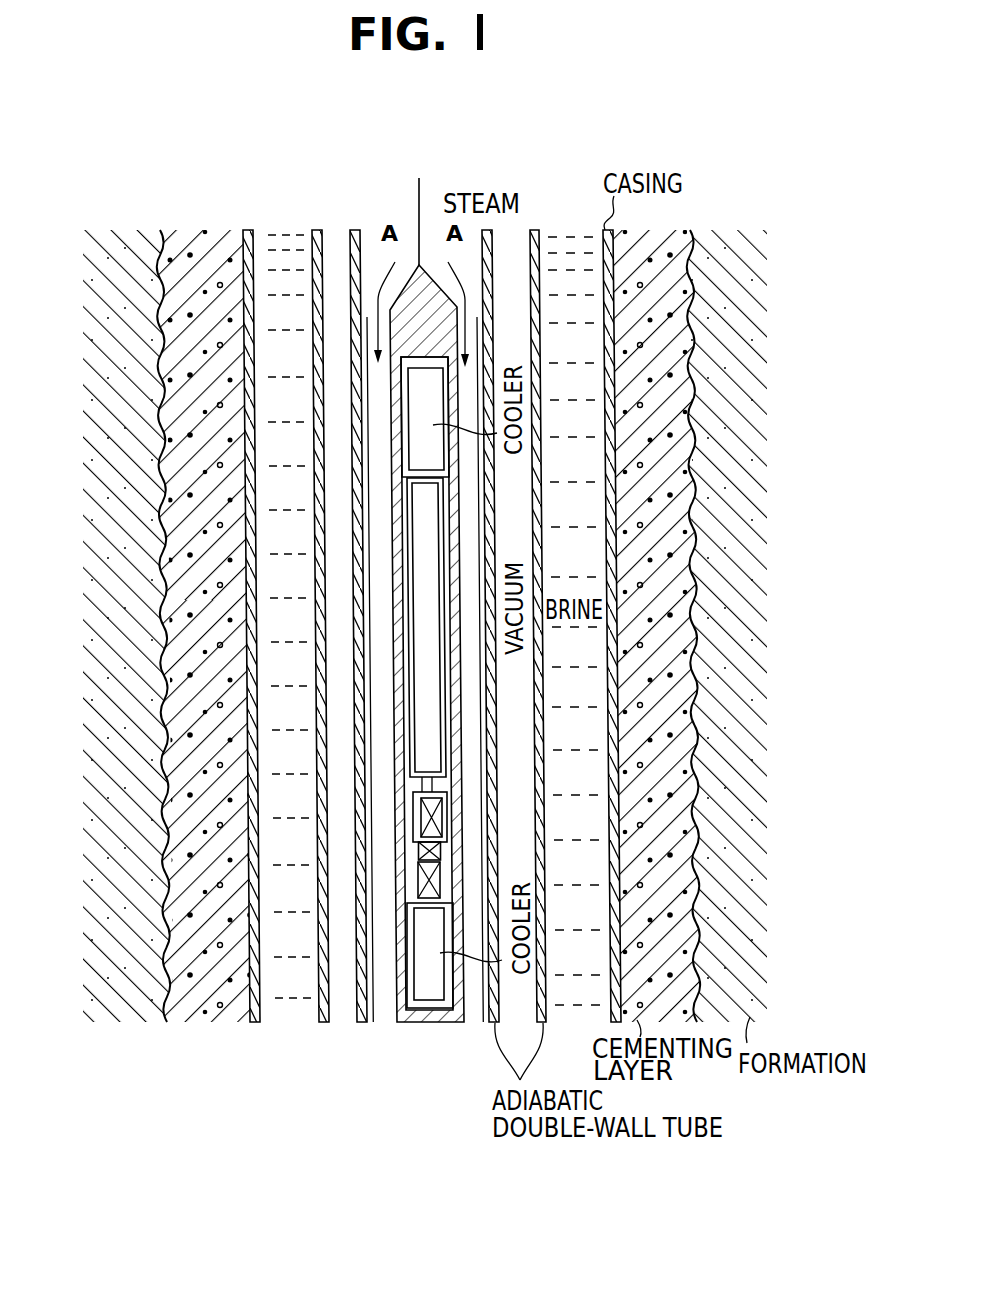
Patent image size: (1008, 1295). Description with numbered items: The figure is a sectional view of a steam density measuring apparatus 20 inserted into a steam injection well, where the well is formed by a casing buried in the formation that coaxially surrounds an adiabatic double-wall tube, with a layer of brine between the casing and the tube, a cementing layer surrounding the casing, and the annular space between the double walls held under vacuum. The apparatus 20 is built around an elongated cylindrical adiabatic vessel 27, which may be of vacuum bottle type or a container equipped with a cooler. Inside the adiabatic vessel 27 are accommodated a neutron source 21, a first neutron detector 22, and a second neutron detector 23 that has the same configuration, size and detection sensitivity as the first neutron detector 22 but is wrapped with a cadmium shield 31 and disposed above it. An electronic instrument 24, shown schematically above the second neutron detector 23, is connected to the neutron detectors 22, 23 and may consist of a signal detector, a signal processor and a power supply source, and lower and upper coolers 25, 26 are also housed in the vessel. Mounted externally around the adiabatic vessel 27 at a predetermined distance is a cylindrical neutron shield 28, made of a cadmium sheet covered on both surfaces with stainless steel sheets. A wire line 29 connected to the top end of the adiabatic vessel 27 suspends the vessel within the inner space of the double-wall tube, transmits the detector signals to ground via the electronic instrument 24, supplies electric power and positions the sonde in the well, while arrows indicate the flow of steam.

The steam density measuring apparatus 20 is at (394, 707).
The neutron source 21 is at (423, 852).
The first neutron detector 22 is at (422, 885).
The second neutron detector 23 is at (425, 817).
The electronic instrument 24 is at (413, 645).
The lower cooler 25 is at (425, 943).
The upper cooler 26 is at (418, 448).
The adiabatic vessel 27 is at (398, 412).
The cylindrical neutron shield 28 is at (362, 370).
The wire line 29 is at (419, 196).
The cadmium shield 31 is at (423, 783).